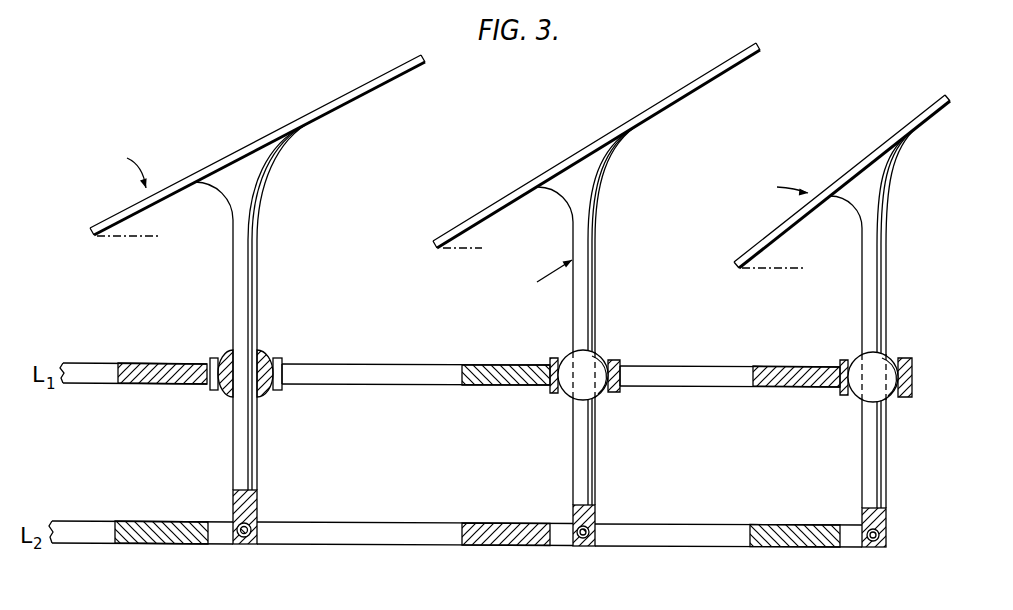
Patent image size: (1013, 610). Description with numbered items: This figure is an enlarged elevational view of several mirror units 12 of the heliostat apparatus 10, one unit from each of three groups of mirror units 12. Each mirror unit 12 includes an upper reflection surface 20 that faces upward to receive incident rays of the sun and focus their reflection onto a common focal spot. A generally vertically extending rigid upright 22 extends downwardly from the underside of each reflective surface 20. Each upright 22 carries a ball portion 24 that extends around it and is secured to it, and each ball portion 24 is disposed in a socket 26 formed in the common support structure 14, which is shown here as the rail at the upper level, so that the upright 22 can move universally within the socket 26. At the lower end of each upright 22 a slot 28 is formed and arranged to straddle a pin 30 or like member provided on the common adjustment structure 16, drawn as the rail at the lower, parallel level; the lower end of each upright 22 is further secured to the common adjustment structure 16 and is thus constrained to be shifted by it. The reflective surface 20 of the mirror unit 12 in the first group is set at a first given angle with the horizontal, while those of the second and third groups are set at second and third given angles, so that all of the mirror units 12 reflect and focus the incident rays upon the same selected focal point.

The heliostat apparatus 10 is at (455, 458).
The mirror unit 12 is at (455, 192).
The common support structure 14 is at (373, 365).
The common adjustment structure 16 is at (410, 523).
The upper reflection surface 20 is at (337, 98).
The upright 22 is at (262, 452).
The ball portion 24 is at (265, 358).
The socket 26 is at (212, 360).
The slot 28 is at (242, 545).
The pin 30 is at (251, 520).